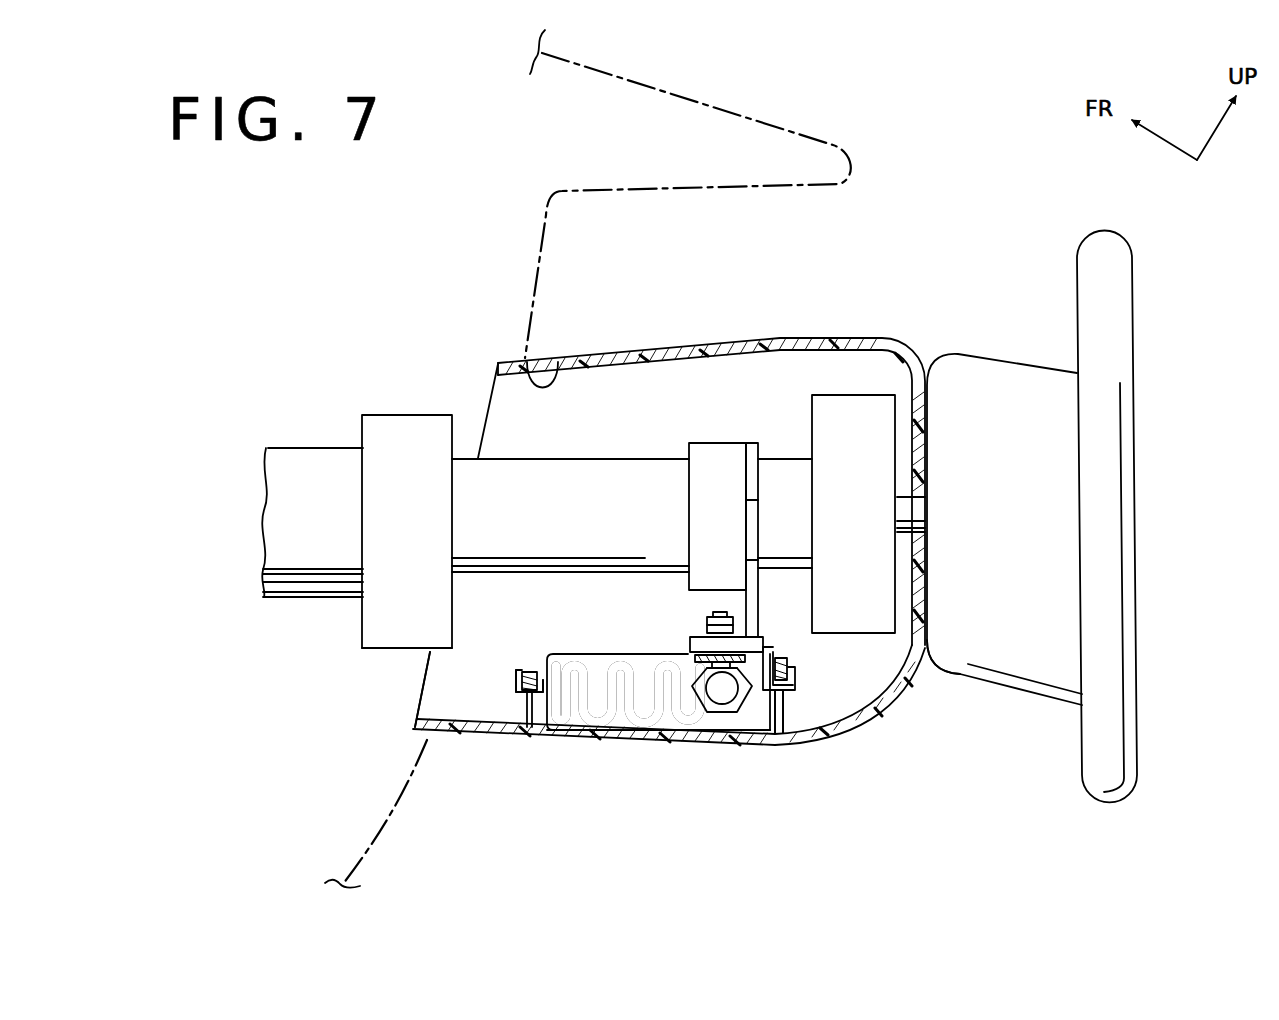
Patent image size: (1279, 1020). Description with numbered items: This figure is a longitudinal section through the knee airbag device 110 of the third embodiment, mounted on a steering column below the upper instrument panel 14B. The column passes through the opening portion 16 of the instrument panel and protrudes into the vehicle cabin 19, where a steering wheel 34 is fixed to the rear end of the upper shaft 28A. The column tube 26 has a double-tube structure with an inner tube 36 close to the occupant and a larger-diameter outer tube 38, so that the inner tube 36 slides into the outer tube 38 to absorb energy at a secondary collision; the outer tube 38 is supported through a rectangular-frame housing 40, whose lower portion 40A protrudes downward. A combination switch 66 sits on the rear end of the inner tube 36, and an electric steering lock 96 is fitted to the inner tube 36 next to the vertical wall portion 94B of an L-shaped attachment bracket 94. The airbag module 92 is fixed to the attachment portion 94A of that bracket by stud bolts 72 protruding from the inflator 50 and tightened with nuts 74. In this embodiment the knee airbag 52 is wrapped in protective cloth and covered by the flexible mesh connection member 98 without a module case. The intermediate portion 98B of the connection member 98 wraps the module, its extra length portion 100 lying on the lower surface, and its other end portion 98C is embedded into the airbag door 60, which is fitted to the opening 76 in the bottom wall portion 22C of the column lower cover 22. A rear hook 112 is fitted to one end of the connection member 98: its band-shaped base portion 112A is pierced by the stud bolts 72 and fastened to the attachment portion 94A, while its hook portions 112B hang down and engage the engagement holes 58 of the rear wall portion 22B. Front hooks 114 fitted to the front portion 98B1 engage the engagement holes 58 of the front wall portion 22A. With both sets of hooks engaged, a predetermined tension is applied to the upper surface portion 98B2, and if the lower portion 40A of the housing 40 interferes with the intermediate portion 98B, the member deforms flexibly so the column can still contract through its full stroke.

The upper instrument panel 14B is at (550, 245).
The opening portion 16 is at (568, 358).
The vehicle cabin 19 is at (936, 837).
The column lower cover 22 is at (518, 745).
The front wall portion 22A is at (520, 668).
The rear wall portion 22B is at (790, 678).
The bottom wall portion 22C is at (447, 737).
The column tube 26 is at (537, 448).
The upper shaft 28A is at (932, 513).
The steering wheel 34 is at (1117, 490).
The inner tube 36 is at (485, 452).
The outer tube 38 is at (340, 448).
The housing 40 is at (362, 650).
The lower portion of housing 40A is at (417, 645).
The inflator 50 is at (722, 700).
The knee airbag 52 is at (650, 742).
The engagement holes 58 is at (527, 700).
The airbag door 60 is at (622, 740).
The combination switch 66 is at (838, 410).
The stud bolts 72 is at (722, 612).
The nuts 74 is at (760, 637).
The opening 76 is at (538, 740).
The airbag module 92 is at (544, 650).
The attachment bracket 94 is at (758, 440).
The attachment portion 94A is at (683, 578).
The vertical wall portion 94B is at (750, 494).
The electric steering lock 96 is at (708, 443).
The connection member 98 is at (664, 719).
The intermediate portion 98B is at (583, 654).
The front portion 98B1 is at (570, 735).
The upper surface portion 98B2 is at (665, 655).
The other end portion 98C is at (770, 735).
The extra length portion 100 is at (705, 740).
The knee airbag device 110 is at (712, 805).
The rear hook 112 is at (783, 700).
The base portion 112A is at (771, 649).
The hook portions 112B is at (795, 690).
The front hooks 114 is at (515, 683).